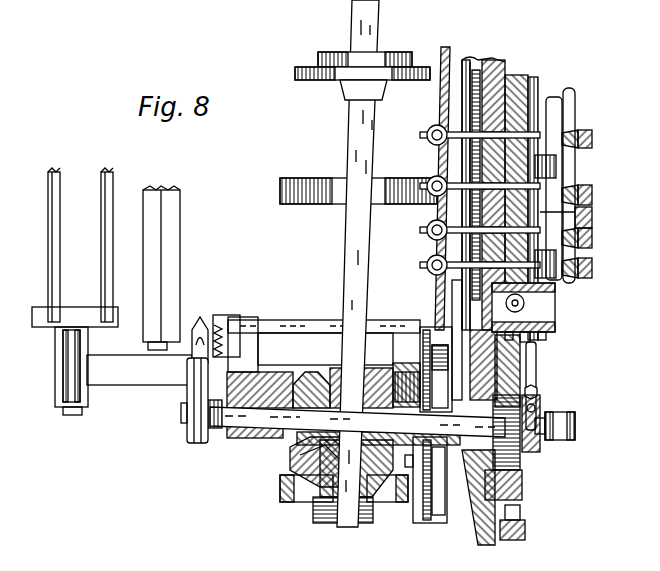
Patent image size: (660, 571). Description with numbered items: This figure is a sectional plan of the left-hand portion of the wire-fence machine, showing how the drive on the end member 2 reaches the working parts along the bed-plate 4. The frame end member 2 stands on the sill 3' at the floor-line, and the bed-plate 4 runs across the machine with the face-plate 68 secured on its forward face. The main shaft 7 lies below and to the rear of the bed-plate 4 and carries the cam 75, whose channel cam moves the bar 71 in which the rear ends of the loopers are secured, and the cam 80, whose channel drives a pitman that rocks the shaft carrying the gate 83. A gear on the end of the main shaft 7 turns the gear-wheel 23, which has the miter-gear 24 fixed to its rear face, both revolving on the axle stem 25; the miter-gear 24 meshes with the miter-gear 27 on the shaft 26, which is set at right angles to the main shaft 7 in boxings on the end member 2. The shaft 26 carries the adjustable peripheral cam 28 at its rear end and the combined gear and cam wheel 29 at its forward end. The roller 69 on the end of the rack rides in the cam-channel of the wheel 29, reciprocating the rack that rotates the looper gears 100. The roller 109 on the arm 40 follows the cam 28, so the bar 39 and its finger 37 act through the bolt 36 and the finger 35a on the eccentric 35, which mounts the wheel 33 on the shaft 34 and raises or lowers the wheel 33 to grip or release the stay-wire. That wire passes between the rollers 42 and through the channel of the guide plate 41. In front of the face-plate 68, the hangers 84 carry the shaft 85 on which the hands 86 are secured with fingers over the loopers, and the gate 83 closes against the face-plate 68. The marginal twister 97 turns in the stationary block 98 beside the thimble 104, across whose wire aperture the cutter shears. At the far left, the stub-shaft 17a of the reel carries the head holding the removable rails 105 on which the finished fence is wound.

The end member 2 is at (139, 370).
The sill 3' is at (174, 268).
The bed-plate 4 is at (488, 58).
The main shaft 7 is at (350, 128).
The stub-shaft 17a is at (73, 415).
The gear-wheel 23 is at (293, 502).
The miter-gear 24 is at (292, 470).
The axle stem 25 is at (345, 523).
The shaft 26 is at (207, 414).
The miter-gear 27 is at (298, 372).
The adjustable peripheral cam 28 is at (206, 445).
The combined gear and cam wheel 29 is at (422, 330).
The wheel 33 is at (520, 455).
The shaft 34 is at (576, 428).
The eccentric 35 is at (532, 452).
The finger 35a is at (537, 409).
The bolt 36 is at (538, 392).
The finger 37 is at (537, 372).
The bar 39 is at (301, 320).
The arm 40 is at (200, 317).
The guide plate 41 is at (522, 485).
The rollers 42 is at (522, 519).
The face-plate 68 is at (520, 75).
The roller 69 is at (440, 345).
The bar 71 is at (447, 48).
The cam 75 is at (300, 67).
The cam 80 is at (304, 204).
The gate 83 is at (538, 84).
The hanger 84 is at (592, 216).
The shaft 85 is at (576, 100).
The hand 86 is at (592, 138).
The marginal twister 97 is at (525, 303).
The stationary block 98 is at (555, 316).
The gear wheel 100 is at (460, 128).
The thimble 104 is at (548, 341).
The removable rails 105 is at (62, 200).
The roller 109 is at (195, 358).